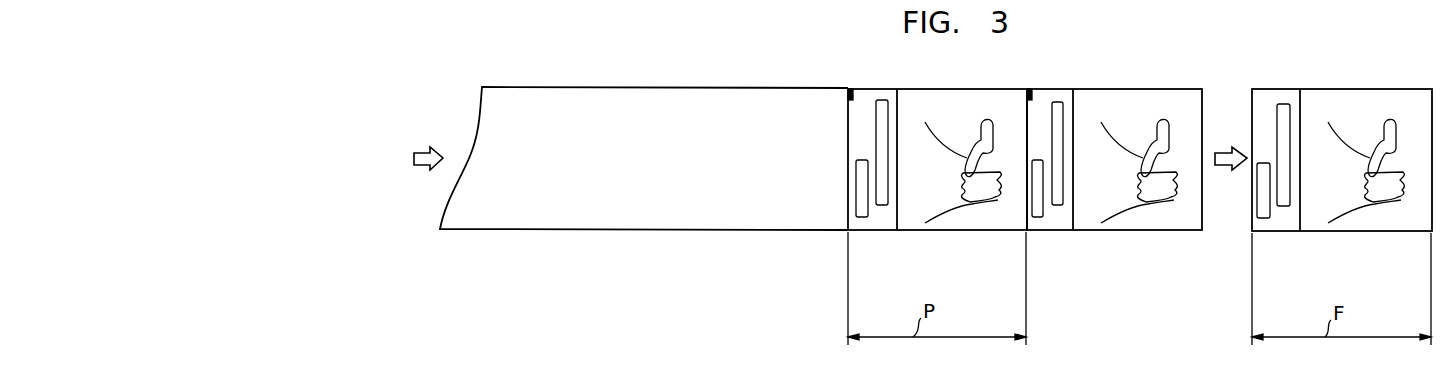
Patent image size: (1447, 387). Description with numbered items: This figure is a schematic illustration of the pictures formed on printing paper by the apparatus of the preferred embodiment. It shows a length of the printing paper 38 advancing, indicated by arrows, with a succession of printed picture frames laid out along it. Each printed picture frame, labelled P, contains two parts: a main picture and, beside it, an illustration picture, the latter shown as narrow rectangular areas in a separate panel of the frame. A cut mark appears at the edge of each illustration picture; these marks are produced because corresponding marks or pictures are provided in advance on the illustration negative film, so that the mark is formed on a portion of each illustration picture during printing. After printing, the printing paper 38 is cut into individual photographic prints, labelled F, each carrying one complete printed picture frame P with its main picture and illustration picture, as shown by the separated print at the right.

The printing paper 38 is at (573, 98).